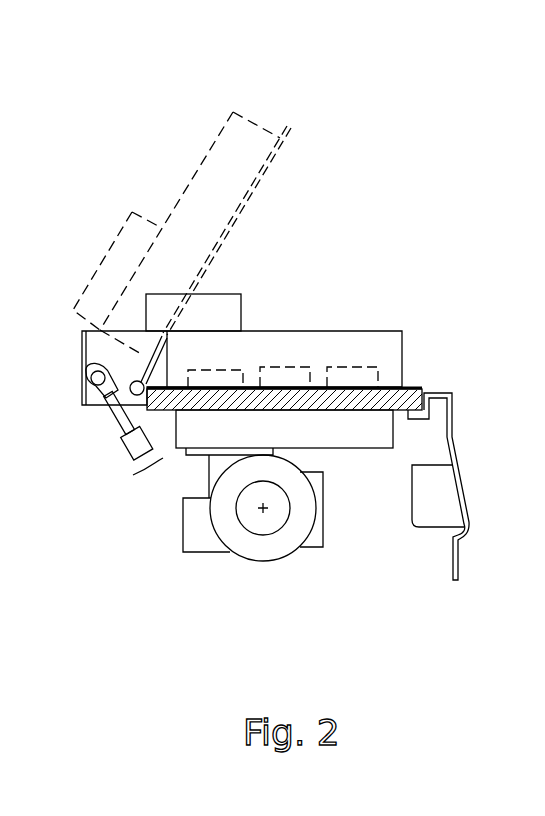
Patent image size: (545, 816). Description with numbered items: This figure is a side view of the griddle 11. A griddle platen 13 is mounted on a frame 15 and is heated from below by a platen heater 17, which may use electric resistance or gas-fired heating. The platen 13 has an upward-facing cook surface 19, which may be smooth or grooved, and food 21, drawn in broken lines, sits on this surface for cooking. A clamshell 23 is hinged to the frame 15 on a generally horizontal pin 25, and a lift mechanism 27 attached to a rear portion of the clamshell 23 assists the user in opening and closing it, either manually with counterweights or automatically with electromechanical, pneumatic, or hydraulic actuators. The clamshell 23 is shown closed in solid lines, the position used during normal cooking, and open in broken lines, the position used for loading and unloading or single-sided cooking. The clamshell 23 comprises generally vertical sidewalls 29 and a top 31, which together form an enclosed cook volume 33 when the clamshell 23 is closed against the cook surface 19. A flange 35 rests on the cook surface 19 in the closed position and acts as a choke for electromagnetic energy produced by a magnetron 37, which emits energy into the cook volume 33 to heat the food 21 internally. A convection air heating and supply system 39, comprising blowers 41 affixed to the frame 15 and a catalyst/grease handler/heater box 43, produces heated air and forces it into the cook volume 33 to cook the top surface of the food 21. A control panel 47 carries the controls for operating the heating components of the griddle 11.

The griddle 11 is at (420, 148).
The griddle platen 13 is at (384, 416).
The frame 15 is at (449, 419).
The platen heater 17 is at (338, 437).
The cook surface 19 is at (245, 372).
The food 21 is at (286, 367).
The clamshell 23 is at (191, 158).
The horizontal pin 25 is at (103, 403).
The lift mechanism 27 is at (118, 433).
The sidewall 29 is at (250, 121).
The top 31 is at (223, 122).
The cook volume 33 is at (356, 320).
The flange 35 is at (288, 128).
The magnetron 37 is at (121, 229).
The convection air heating and supply system 39 is at (281, 570).
The blower 41 is at (235, 552).
The catalyst/grease handler/heater box 43 is at (316, 548).
The control panel 47 is at (447, 497).